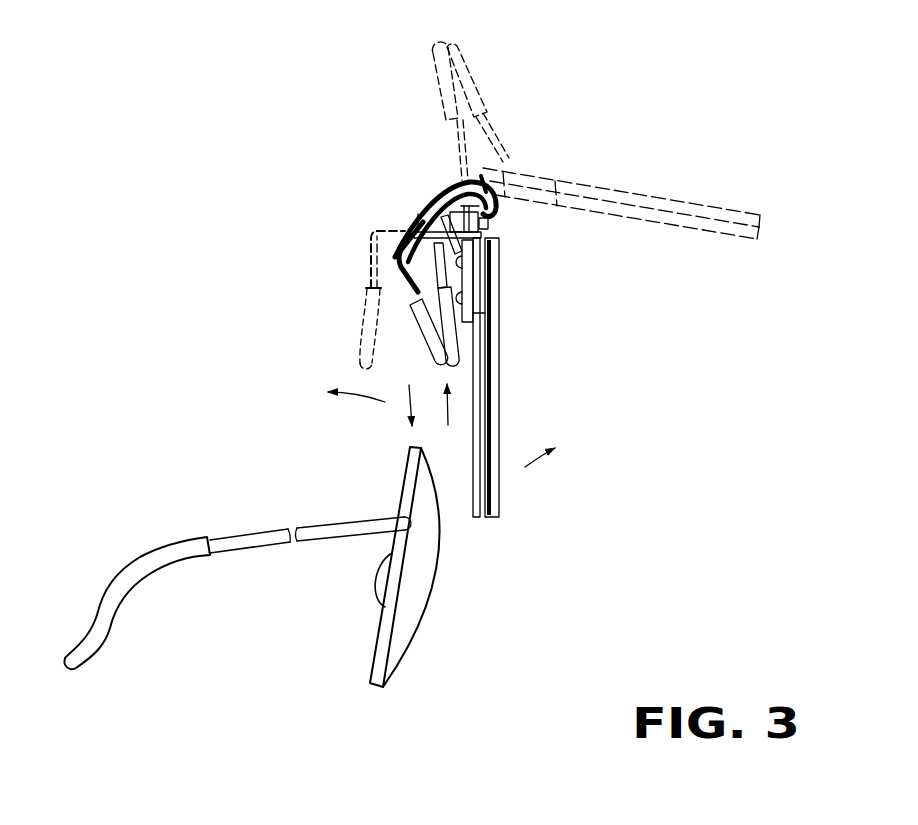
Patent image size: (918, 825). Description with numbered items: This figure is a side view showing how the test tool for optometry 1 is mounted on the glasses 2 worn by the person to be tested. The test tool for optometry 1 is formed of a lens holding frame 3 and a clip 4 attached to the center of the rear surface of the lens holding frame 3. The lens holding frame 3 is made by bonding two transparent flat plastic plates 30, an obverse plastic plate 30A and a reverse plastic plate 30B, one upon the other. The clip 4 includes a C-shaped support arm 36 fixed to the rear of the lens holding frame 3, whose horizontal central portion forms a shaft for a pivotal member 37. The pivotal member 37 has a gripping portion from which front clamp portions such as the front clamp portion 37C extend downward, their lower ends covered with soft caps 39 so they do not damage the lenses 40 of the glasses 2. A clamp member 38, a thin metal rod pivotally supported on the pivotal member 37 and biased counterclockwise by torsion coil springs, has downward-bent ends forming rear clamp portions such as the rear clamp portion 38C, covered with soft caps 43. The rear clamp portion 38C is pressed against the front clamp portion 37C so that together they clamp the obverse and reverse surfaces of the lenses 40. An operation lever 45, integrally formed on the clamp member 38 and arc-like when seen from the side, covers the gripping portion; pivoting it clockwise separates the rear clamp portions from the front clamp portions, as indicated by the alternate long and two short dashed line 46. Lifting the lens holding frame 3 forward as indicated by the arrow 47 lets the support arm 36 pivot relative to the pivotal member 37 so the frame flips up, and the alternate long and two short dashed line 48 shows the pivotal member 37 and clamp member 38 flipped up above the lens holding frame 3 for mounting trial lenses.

The test tool for optometry 1 is at (584, 116).
The glasses 2 is at (205, 485).
The lens holding frame 3 is at (521, 410).
The clip 4 is at (376, 200).
The transparent flat plastic plates 30 is at (559, 583).
The obverse plastic plate 30A is at (494, 522).
The reverse plastic plate 30B is at (477, 522).
The support arm 36 is at (451, 239).
The pivotal member 37 is at (490, 223).
The front clamp portion 37C is at (446, 277).
The clamp member 38 is at (386, 247).
The rear clamp portion 38C is at (400, 275).
The caps 39 is at (463, 346).
The lenses 40 is at (406, 632).
The caps 43 is at (434, 352).
The operation lever 45 is at (447, 186).
The alternate long and two short dashed line 46 is at (357, 347).
The arrow 47 is at (503, 467).
The alternate long and two short dashed line 48 is at (470, 78).